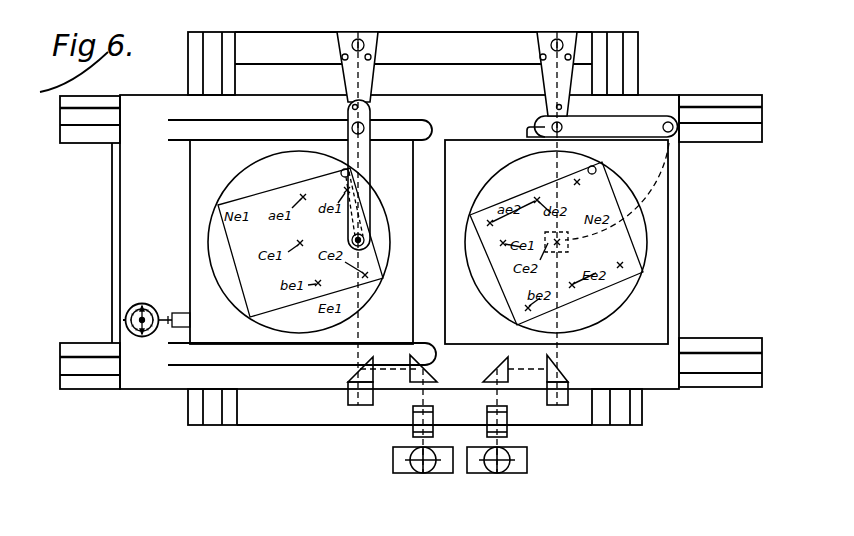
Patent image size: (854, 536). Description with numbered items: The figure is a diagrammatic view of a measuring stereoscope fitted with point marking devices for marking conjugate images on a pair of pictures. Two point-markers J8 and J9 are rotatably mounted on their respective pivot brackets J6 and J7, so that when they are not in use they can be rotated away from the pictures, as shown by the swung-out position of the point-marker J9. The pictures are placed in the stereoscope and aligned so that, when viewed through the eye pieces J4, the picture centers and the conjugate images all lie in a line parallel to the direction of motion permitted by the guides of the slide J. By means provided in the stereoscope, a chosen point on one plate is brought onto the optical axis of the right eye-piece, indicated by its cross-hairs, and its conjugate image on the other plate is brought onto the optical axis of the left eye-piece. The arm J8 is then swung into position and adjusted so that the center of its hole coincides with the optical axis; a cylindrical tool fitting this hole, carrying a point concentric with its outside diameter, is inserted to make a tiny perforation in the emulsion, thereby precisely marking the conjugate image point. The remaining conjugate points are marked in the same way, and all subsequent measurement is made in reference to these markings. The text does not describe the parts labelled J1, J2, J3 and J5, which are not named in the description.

The slide J is at (411, 228).
The slide arm J1 is at (372, 164).
The right disc J2 is at (567, 238).
The left disc J3 is at (299, 242).
The eye pieces J4 is at (460, 452).
The dial gauge J5 is at (156, 307).
The pivot bracket J6 is at (374, 48).
The pivot bracket J7 is at (547, 50).
The point-marker J8 is at (363, 150).
The point-marker J9 is at (627, 127).